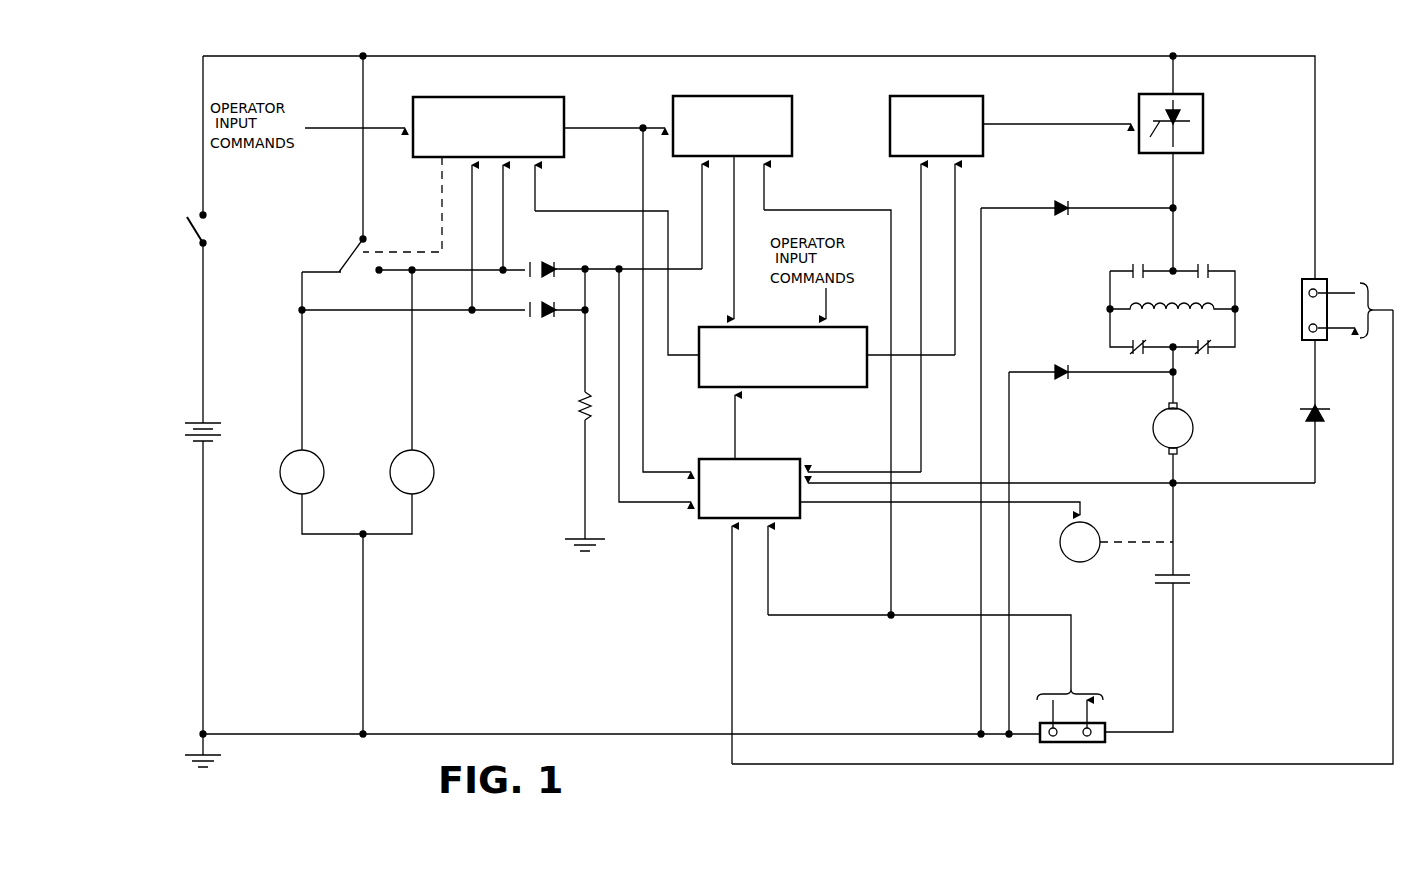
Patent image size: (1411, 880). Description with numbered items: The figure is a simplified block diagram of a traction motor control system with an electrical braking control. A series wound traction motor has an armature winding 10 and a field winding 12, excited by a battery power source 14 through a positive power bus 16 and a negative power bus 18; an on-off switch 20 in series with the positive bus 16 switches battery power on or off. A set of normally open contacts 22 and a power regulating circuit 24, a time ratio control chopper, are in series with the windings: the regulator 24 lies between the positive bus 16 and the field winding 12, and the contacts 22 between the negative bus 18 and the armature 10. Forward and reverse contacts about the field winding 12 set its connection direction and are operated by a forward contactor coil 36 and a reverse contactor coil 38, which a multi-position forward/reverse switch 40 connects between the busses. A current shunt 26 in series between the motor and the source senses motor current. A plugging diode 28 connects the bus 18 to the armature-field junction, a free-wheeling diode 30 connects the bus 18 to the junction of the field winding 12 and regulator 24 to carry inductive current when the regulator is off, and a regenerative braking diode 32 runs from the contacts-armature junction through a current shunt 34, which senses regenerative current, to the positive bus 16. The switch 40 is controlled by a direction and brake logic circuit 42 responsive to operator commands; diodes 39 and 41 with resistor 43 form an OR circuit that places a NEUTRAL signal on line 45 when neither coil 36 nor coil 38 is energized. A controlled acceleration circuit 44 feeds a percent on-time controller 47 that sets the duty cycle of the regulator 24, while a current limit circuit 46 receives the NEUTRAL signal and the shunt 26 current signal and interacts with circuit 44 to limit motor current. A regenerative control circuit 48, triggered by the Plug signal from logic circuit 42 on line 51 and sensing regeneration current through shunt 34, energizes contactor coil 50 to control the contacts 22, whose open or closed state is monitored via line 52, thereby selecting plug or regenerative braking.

The armature winding 10 is at (1188, 412).
The field winding 12 is at (1110, 304).
The battery power source 14 is at (216, 417).
The positive power bus 16 is at (430, 58).
The negative power bus 18 is at (294, 734).
The on-off switch 20 is at (210, 232).
The normally open contacts 22 is at (1184, 586).
The power regulating circuit 24 is at (1204, 95).
The current shunt 26 is at (1088, 716).
The plugging diode 28 is at (1064, 382).
The free-wheeling diode 30 is at (1060, 200).
The regenerative braking diode 32 is at (1301, 416).
The current shunt 34 is at (1302, 280).
The forward contactor coil 36 is at (320, 452).
The reverse contactor coil 38 is at (405, 447).
The diode 39 is at (550, 262).
The forward/reverse switch 40 is at (341, 247).
The diode 41 is at (540, 318).
The direction and brake logic circuit 42 is at (516, 88).
The resistor 43 is at (578, 402).
The controlled acceleration circuit 44 is at (856, 390).
The line 45 is at (600, 269).
The current limit circuit 46 is at (765, 84).
The percent on-time controller 47 is at (962, 84).
The regenerative control circuit 48 is at (786, 444).
The contactor coil 50 is at (1098, 531).
The line 51 is at (614, 126).
The line 52 is at (1080, 480).